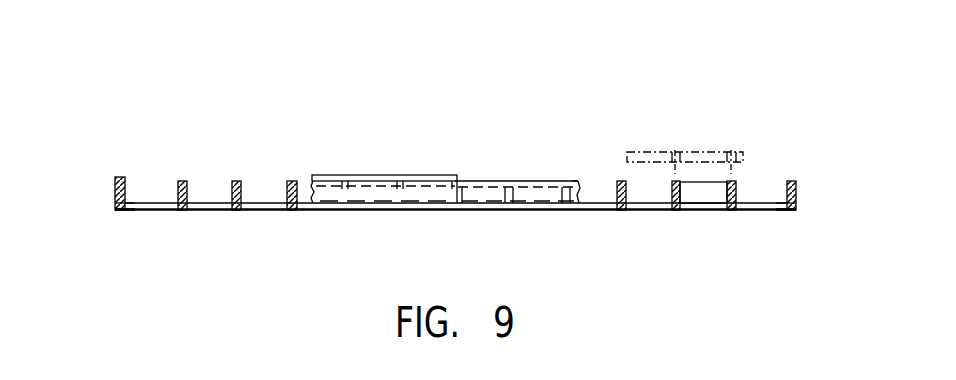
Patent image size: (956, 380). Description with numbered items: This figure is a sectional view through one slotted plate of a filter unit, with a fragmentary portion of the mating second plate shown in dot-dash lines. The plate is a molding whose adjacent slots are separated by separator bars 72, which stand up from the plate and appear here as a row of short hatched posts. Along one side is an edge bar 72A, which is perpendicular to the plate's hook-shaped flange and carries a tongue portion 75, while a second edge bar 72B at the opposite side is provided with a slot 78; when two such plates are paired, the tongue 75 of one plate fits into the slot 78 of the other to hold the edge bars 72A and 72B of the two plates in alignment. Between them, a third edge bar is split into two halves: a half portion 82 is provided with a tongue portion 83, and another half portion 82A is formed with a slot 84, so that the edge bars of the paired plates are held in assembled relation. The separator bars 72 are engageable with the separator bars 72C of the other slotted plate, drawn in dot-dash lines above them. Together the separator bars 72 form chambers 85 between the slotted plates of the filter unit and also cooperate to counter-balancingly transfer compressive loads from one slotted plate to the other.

The separator bar 72 is at (292, 181).
The edge bar 72A is at (115, 207).
The second edge bar 72B is at (797, 200).
The separator bars of the other slotted plate 72C is at (655, 156).
The tongue portion 75 is at (121, 178).
The slot 78 is at (797, 183).
The half portion of third edge bar 82 is at (352, 174).
The half portion of third edge bar 82A is at (572, 178).
The tongue portion 83 is at (455, 178).
The slot 84 is at (493, 180).
The chamber 85 is at (703, 195).